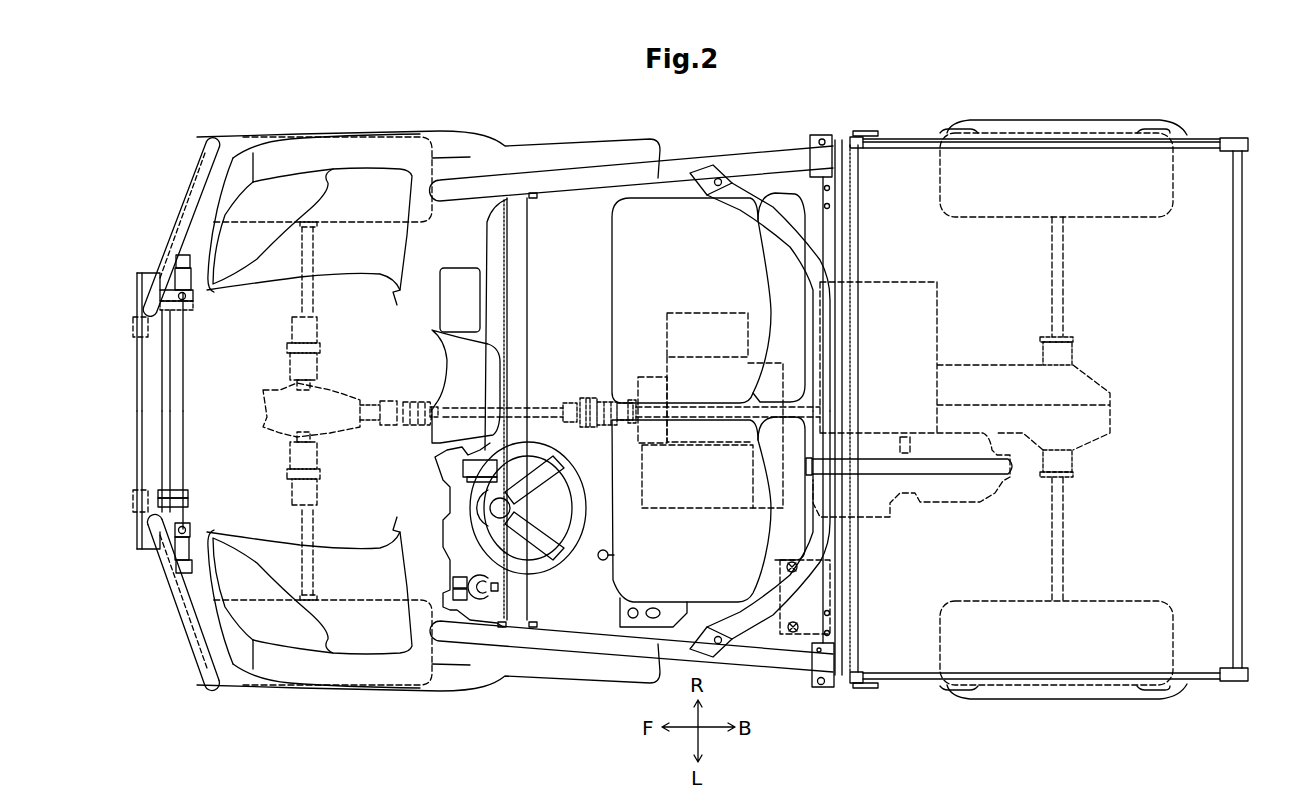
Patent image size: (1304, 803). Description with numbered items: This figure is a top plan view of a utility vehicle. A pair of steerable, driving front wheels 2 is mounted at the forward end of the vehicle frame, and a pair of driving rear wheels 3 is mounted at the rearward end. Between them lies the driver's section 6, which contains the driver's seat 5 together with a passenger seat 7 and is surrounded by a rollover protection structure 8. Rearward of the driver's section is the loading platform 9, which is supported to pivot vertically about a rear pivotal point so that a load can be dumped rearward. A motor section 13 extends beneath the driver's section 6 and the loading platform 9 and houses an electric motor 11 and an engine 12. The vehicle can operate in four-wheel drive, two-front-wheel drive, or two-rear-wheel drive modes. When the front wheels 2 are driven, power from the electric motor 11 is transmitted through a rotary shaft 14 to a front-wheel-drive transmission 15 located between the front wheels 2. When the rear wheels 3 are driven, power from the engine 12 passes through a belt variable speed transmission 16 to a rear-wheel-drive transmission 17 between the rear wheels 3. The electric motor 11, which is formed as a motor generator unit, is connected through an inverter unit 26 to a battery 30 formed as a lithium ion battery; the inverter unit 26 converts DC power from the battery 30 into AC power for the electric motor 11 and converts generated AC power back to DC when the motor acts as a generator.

The front wheels 2 is at (244, 140).
The rear wheels 3 is at (1060, 133).
The driver's seat 5 is at (627, 570).
The driver's section 6 is at (597, 625).
The passenger seat 7 is at (617, 276).
The rollover protection structure (ROPS) 8 is at (683, 158).
The loading platform 9 is at (917, 160).
The electric motor 11 is at (683, 359).
The engine 12 is at (890, 282).
The motor section 13 is at (917, 535).
The rotary shaft 14 is at (535, 407).
The front-wheel-drive transmission 15 is at (280, 390).
The belt variable speed transmission 16 is at (943, 505).
The rear-wheel-drive transmission 17 is at (1078, 374).
The inverter unit 26 is at (656, 622).
The battery 30 is at (727, 510).